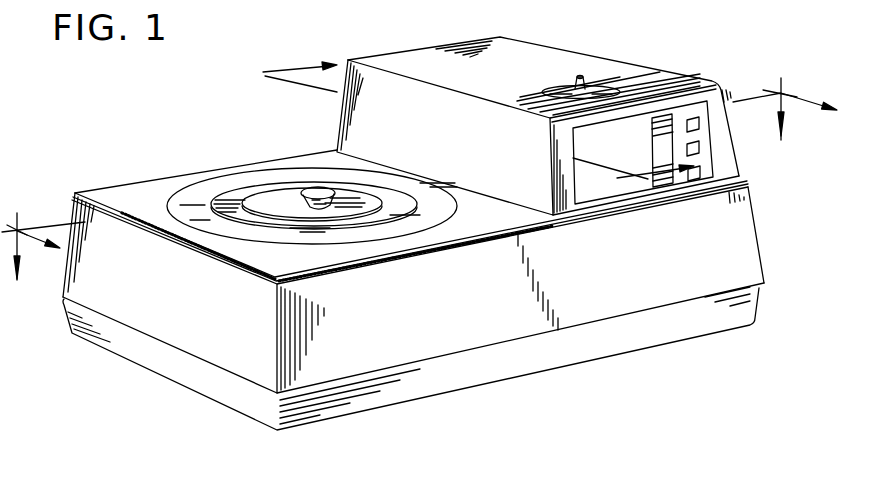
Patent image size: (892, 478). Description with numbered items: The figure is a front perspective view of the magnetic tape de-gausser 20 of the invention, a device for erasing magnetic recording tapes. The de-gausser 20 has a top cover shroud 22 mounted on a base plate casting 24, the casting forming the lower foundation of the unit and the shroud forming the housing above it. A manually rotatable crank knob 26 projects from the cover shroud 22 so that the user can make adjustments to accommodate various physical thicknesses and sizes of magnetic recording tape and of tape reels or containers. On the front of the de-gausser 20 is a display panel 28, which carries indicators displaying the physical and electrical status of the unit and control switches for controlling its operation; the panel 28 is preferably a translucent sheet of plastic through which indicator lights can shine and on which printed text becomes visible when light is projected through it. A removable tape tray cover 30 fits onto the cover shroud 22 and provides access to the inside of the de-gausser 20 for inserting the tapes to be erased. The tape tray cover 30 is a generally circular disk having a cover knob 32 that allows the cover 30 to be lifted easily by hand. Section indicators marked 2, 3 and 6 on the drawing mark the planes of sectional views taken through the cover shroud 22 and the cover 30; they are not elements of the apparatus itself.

The magnetic tape de-gausser 20 is at (180, 130).
The top cover shroud 22 is at (337, 129).
The base plate casting 24 is at (548, 372).
The crank knob 26 is at (579, 77).
The display panel 28 is at (713, 148).
The tape tray cover 30 is at (186, 198).
The cover knob 32 is at (300, 188).
The section line 2- 2 is at (467, 132).
The section line 3- 3 is at (432, 188).
The section line 6- 6 is at (400, 198).